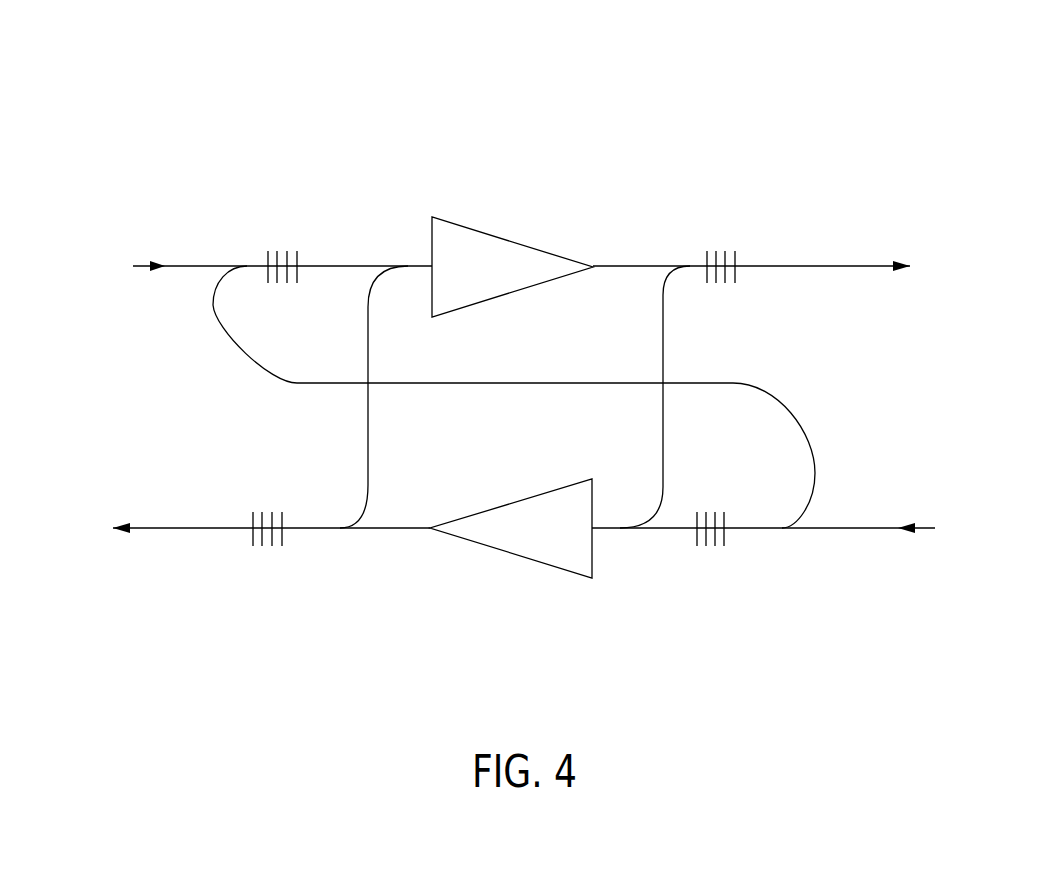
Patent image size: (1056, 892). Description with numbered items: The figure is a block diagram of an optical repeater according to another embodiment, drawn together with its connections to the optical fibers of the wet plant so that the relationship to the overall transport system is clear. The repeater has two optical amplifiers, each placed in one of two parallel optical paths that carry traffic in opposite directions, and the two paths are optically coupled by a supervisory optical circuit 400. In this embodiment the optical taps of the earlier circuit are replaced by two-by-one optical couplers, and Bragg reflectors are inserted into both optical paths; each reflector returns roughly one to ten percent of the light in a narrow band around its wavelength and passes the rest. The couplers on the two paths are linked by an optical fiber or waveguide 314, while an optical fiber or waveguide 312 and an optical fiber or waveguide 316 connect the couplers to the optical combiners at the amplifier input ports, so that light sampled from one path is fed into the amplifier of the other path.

The supervisory optical circuit 400 is at (190, 395).
The optical fiber or waveguide 312 is at (373, 437).
The optical fiber or waveguide 314 is at (556, 380).
The optical fiber or waveguide 316 is at (660, 392).